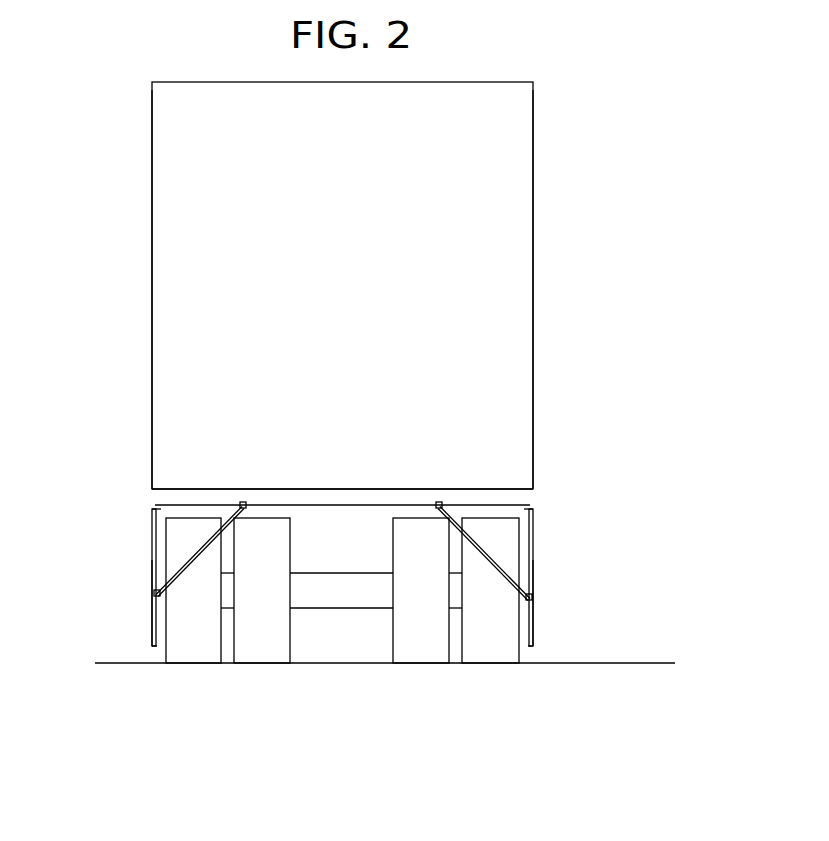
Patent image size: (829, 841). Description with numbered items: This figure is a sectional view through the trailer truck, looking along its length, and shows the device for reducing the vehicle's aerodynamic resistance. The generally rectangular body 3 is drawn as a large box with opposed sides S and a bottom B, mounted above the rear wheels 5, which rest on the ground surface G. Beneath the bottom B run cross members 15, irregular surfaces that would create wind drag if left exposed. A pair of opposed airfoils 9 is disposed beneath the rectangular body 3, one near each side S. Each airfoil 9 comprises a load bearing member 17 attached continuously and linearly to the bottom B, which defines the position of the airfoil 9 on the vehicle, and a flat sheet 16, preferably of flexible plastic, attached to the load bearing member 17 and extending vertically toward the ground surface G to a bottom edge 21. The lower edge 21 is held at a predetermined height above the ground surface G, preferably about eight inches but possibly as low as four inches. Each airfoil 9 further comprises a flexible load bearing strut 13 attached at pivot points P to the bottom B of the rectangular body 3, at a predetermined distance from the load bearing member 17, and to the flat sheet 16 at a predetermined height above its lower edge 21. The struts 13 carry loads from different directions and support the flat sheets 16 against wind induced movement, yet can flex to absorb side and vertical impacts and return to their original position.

The rectangular body 3 is at (355, 178).
The sides S is at (151, 283).
The cross members 15 is at (280, 489).
The bottom B is at (358, 505).
The pivot points P is at (241, 503).
The load bearing members 17 is at (152, 513).
The airfoils 9 is at (151, 545).
The flat sheets 16 is at (151, 585).
The flexible load bearing struts 13 is at (205, 548).
The bottom edge 21 is at (152, 645).
The rear wheels 5 is at (420, 640).
The ground surface G is at (607, 667).